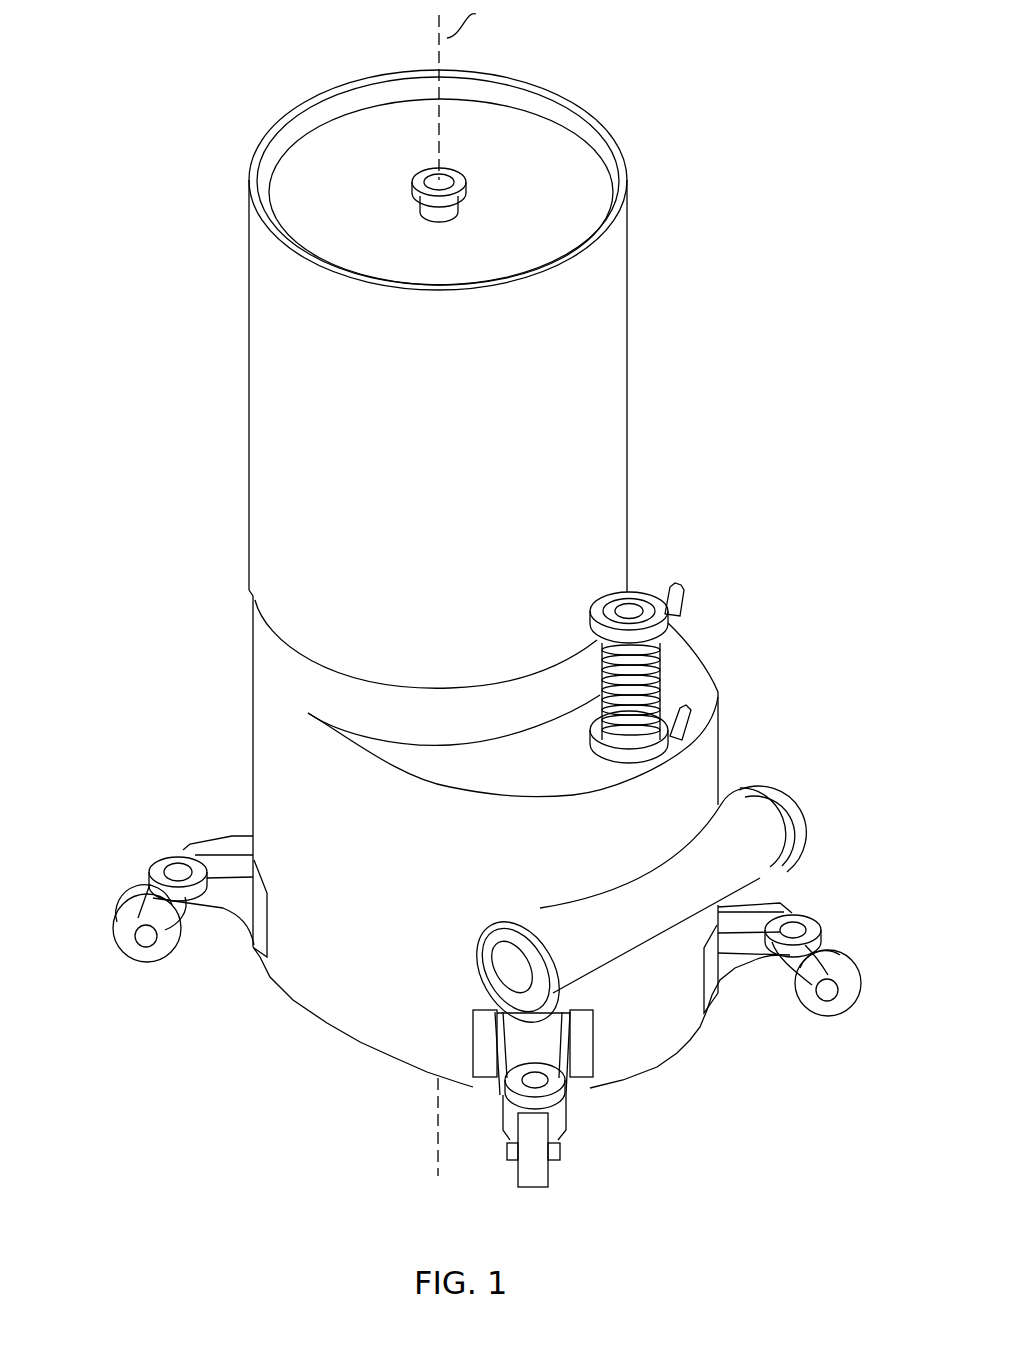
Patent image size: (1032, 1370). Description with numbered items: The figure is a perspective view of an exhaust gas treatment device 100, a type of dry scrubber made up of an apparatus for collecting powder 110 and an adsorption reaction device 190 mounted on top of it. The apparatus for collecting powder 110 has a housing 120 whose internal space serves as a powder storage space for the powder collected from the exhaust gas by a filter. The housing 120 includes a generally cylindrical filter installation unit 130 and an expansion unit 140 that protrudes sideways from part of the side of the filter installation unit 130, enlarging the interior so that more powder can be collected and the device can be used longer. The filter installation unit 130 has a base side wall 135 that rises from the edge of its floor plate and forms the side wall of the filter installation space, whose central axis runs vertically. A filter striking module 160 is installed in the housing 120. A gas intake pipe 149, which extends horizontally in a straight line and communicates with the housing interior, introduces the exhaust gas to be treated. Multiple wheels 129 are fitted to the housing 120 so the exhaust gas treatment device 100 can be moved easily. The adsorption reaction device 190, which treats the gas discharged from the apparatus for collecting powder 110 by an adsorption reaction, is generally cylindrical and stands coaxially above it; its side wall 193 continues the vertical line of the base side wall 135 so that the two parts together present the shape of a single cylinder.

The exhaust gas treatment device 100 is at (170, 98).
The apparatus for collecting powder 110 is at (716, 634).
The housing 120 is at (367, 1032).
The wheels 129 is at (135, 900).
The filter installation unit 130 is at (253, 780).
The base side wall 135 is at (284, 682).
The expansion unit 140 is at (657, 1052).
The gas intake pipe 149 is at (780, 822).
The filter striking module 160 is at (660, 566).
The adsorption reaction device 190 is at (670, 280).
The side wall 193 is at (271, 393).